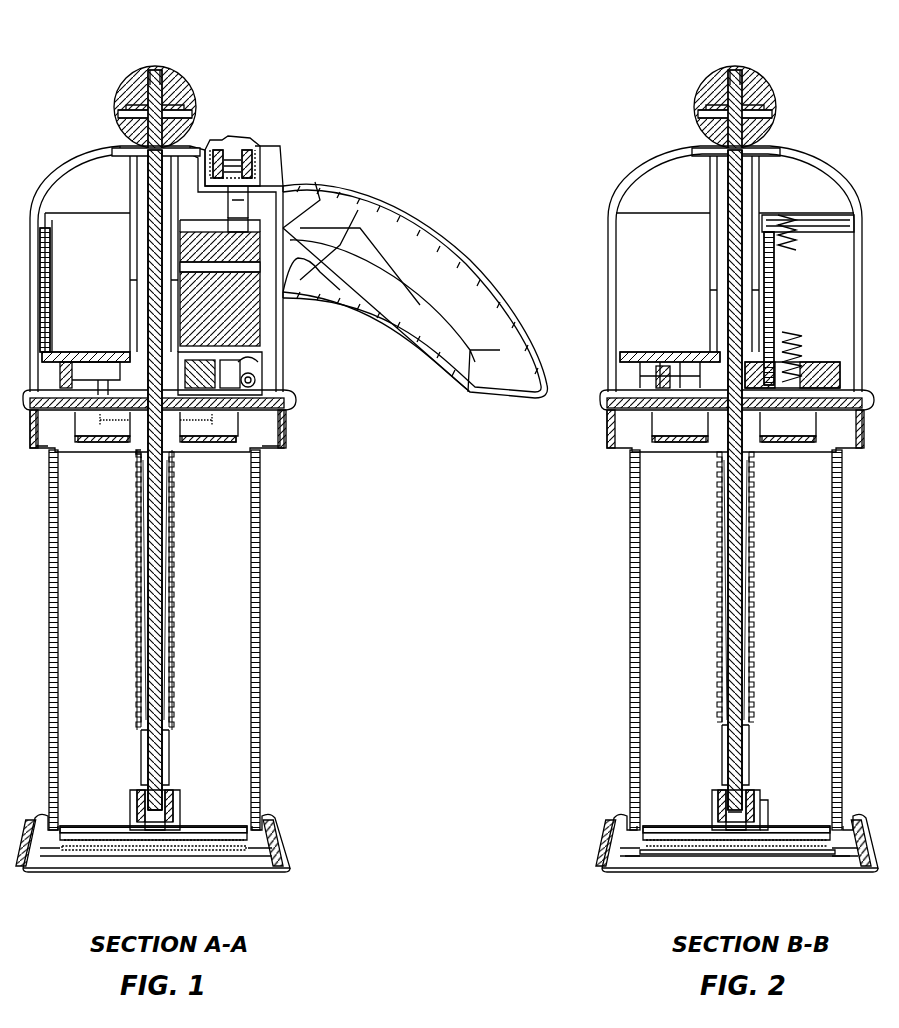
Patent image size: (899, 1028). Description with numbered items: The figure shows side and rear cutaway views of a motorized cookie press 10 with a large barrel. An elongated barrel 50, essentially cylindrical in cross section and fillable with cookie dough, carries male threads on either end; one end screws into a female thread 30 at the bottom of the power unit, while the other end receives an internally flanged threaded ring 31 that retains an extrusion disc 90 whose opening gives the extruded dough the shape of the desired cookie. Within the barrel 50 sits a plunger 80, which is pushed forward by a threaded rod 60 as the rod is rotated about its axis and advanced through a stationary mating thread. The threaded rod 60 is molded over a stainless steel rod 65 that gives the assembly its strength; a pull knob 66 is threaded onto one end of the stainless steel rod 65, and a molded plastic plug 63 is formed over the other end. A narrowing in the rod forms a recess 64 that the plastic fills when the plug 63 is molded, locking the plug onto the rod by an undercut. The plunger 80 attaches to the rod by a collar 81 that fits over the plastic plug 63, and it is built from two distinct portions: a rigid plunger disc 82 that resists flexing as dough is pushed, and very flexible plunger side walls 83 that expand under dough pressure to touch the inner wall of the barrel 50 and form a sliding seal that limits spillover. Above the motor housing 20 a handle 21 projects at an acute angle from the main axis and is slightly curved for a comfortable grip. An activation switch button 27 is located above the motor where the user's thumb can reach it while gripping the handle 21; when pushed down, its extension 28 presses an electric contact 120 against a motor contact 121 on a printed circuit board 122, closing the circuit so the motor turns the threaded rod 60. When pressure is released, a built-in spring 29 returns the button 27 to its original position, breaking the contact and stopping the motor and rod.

In FIG. 1, the dispensing device 10 is at (276, 72).
In FIG. 2, the dispensing device 10 is at (748, 43).
In FIG. 2, the motor housing 20 is at (648, 192).
In FIG. 1, the handle 21 is at (430, 242).
In FIG. 1, the activation switch button 27 is at (218, 138).
In FIG. 1, the extension 28 is at (255, 206).
In FIG. 1, the built-in spring 29 is at (262, 160).
In FIG. 2, the female thread 30 is at (603, 440).
In FIG. 2, the internally flanged threaded ring 31 is at (608, 840).
In FIG. 2, the elongated barrel 50 is at (630, 596).
In FIG. 2, the threaded rod 60 is at (726, 352).
In FIG. 2, the molded plastic plug 63 is at (716, 798).
In FIG. 2, the recess 64 is at (730, 812).
In FIG. 2, the stainless steel rod 65 is at (712, 178).
In FIG. 2, the pull knob 66 is at (772, 50).
In FIG. 2, the plunger 80 is at (804, 844).
In FIG. 2, the collar 81 is at (766, 808).
In FIG. 2, the plunger disc 82 is at (775, 846).
In FIG. 2, the plunger side walls 83 is at (830, 854).
In FIG. 2, the extrusion disc 90 is at (680, 856).
In FIG. 1, the electric contact 120 is at (318, 200).
In FIG. 1, the motor contact 121 is at (340, 235).
In FIG. 1, the printed circuit board 122 is at (283, 305).